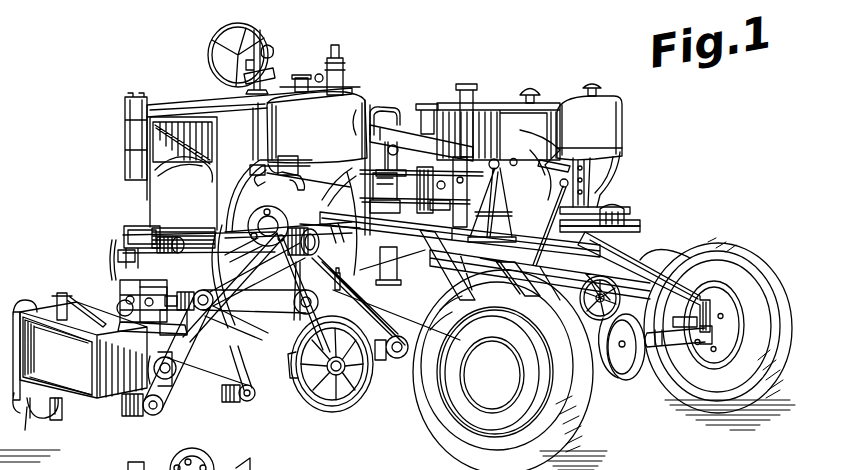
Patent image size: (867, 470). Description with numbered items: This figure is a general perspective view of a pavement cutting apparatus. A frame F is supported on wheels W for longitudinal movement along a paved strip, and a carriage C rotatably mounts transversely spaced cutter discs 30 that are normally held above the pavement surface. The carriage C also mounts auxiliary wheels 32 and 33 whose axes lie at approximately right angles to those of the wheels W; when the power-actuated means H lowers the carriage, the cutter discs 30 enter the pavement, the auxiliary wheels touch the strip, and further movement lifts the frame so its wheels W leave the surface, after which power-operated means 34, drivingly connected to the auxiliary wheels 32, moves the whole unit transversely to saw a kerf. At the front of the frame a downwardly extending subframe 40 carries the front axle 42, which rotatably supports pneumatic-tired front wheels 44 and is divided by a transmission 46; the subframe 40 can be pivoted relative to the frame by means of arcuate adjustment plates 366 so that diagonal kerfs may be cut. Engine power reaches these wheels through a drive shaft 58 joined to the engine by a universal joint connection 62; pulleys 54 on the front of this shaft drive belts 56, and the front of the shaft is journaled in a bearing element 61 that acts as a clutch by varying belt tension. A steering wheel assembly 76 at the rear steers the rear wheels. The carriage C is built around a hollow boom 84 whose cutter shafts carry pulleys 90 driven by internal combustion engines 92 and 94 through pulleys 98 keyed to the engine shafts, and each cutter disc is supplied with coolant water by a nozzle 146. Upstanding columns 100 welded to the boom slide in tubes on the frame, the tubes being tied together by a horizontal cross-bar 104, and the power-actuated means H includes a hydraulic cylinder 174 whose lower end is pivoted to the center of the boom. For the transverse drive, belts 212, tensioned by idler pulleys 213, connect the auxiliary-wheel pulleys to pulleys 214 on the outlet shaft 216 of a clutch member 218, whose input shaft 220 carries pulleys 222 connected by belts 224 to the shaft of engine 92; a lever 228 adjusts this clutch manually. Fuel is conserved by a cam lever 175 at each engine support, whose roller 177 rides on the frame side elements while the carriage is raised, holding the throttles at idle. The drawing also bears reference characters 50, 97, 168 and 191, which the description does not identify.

The cutter discs 30 is at (38, 410).
The auxiliary wheels 32 is at (330, 410).
The auxiliary wheels 33 is at (660, 250).
The power-operated means 34 is at (183, 94).
The subframe 40 is at (722, 234).
The front axle 42 is at (688, 350).
The front wheels 44 is at (660, 406).
The transmission 46 is at (612, 374).
The seat support 50 is at (590, 190).
The pulleys 54 is at (500, 168).
The belts 56 is at (535, 203).
The drive shaft 58 is at (421, 199).
The bearing element 61 is at (442, 146).
The universal joint connection 62 is at (339, 221).
The steering wheel assembly 76 is at (268, 30).
The boom 84 is at (77, 300).
The pulleys 90 is at (162, 410).
The internal combustion engine 92 is at (357, 108).
The internal combustion engine 94 is at (618, 112).
The idler pulley 97 is at (155, 354).
The pulleys 98 is at (304, 228).
The columns 100 is at (462, 92).
The cross-bar 104 is at (387, 118).
The nozzle 146 is at (28, 416).
The exhaust stack 168 is at (472, 84).
The hydraulic cylinder 174 is at (460, 248).
The cam lever 175 is at (296, 166).
The roller 177 is at (332, 252).
The valve 191 is at (318, 80).
The belts 212 is at (292, 400).
The idler pulleys 213 is at (220, 384).
The pulleys 214 is at (204, 290).
The outlet shaft 216 is at (260, 278).
The clutch member 218 is at (110, 261).
The input shaft 220 is at (130, 230).
The pulleys 222 is at (128, 240).
The belts 224 is at (282, 264).
The lever 228 is at (128, 232).
The adjustment plates 366 is at (627, 239).
The carriage C is at (88, 408).
The frame F is at (648, 245).
The power-actuated means H is at (317, 119).
The wheels W is at (594, 433).